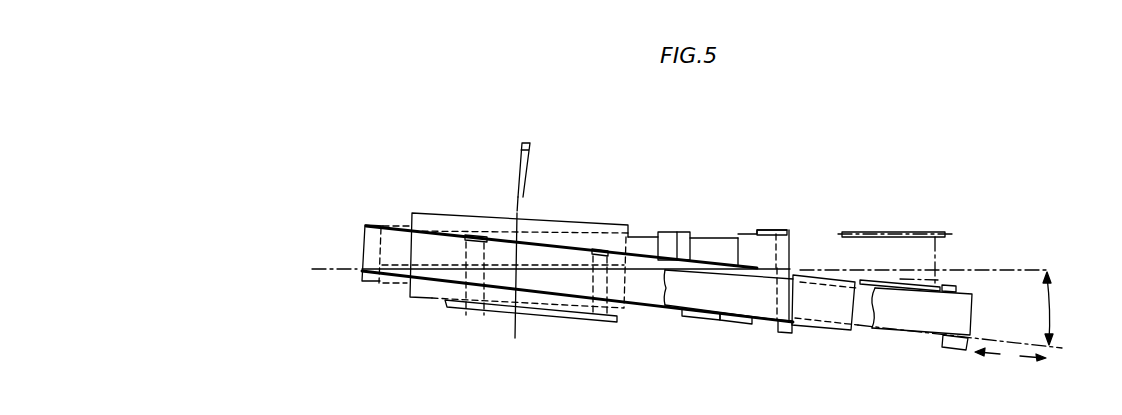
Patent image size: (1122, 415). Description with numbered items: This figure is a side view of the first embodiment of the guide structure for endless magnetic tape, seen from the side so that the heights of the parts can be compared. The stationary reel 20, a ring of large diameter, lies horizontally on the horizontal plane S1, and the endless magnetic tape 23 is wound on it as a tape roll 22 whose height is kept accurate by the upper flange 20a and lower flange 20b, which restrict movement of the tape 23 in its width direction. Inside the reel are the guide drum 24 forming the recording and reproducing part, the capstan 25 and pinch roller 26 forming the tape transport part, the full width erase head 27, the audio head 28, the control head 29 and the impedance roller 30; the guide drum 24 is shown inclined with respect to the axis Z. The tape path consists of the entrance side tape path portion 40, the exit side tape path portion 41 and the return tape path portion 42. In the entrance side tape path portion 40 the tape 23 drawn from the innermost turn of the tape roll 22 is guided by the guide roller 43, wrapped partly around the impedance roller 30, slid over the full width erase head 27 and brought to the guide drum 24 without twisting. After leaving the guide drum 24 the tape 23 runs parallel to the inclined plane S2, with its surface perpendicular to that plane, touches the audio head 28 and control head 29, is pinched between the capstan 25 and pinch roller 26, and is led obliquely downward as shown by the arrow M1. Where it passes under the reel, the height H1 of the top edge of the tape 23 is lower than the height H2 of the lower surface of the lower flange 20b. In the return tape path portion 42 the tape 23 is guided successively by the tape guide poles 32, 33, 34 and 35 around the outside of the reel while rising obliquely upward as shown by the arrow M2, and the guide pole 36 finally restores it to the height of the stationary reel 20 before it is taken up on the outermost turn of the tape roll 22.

The stationary reel 20 is at (857, 231).
The upper flange 20a is at (933, 236).
The lower flange 20b is at (947, 282).
The tape roll 22 is at (940, 255).
The endless magnetic tape 23 is at (723, 237).
The guide drum 24 is at (567, 219).
The capstan 25 is at (790, 333).
The pinch roller 26 is at (820, 333).
The full width erase head 27 is at (665, 229).
The audio head 28 is at (703, 318).
The control head 29 is at (732, 323).
The impedance roller 30 is at (748, 234).
The tape guide pole 32 is at (926, 351).
The tape guide pole 33 is at (952, 350).
The tape guide pole 34 is at (593, 308).
The tape guide pole 35 is at (460, 303).
The tape guide pole 36 is at (365, 283).
The entrance side tape path portion 40 is at (702, 237).
The exit side tape path portion 41 is at (768, 302).
The return tape path portion 42 is at (641, 305).
The guide roller 43 is at (782, 230).
The horizontal plane S1 is at (1038, 269).
The inclined plane S2 is at (1062, 348).
The arrow M1 is at (1034, 371).
The arrow M2 is at (985, 367).
The height of top edge of tape H1 is at (937, 289).
The height of bottom surface of stationary reel H2 is at (958, 289).
The axis Z is at (520, 143).